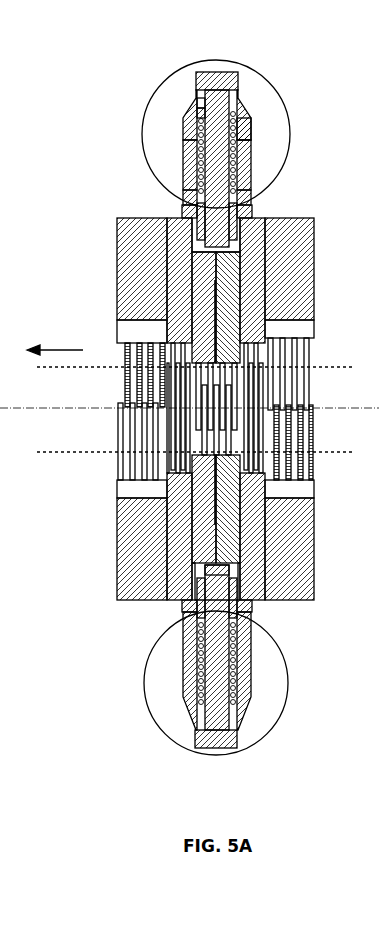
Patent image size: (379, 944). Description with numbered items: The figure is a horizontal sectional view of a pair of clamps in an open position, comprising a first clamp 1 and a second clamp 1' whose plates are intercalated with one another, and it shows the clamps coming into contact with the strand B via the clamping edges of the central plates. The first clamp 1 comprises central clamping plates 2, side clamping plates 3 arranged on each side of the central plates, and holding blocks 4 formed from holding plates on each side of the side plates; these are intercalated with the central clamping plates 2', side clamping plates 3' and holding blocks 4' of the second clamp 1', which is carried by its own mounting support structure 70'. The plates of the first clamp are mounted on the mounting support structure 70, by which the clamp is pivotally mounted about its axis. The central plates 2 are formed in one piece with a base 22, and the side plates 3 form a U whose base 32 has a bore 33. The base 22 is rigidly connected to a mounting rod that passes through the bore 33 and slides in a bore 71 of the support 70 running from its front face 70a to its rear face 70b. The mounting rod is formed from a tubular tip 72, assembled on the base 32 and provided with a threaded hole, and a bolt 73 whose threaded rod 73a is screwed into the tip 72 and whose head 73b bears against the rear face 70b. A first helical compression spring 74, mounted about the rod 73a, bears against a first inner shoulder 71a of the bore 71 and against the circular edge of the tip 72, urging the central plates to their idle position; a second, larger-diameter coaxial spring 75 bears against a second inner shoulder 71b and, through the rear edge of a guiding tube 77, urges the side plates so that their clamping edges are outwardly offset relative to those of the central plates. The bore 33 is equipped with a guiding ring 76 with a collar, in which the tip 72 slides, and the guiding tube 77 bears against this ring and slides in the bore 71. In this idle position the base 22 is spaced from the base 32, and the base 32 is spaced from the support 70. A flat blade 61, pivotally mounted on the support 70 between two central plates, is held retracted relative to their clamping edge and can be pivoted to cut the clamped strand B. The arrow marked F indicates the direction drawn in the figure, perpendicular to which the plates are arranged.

The first clamp 1 is at (152, 280).
The second clamp 1' is at (240, 527).
The central clamping plates 2 is at (135, 339).
The central clamping plates of the second clamp 2' is at (140, 470).
The side clamping plates 3 is at (171, 406).
The side clamping plates of the second clamp 3' is at (172, 421).
The holding blocks 4 is at (313, 365).
The holding blocks of the second clamp 4' is at (311, 451).
The base of the central clamping plates 22 is at (200, 272).
The base of the side clamping plates 32 is at (195, 234).
The bore of the base of the side plates 33 is at (270, 226).
The flat blade 61 is at (222, 307).
The mounting support structure 70 is at (222, 133).
The mounting support structure of the second clamp 70' is at (238, 660).
The front face of the support 70a is at (245, 197).
The rear face of the support 70b is at (240, 97).
The bore of the support 71 is at (244, 150).
The first inner shoulder 71a is at (193, 102).
The second inner shoulder 71b is at (246, 132).
The tubular tip 72 is at (198, 230).
The bolt 73 is at (188, 168).
The rod of the bolt 73a is at (182, 143).
The bolt head 73b is at (214, 74).
The first helical compression spring 74 is at (193, 110).
The second helical compression spring 75 is at (190, 127).
The guiding ring 76 is at (246, 214).
The guiding tube 77 is at (190, 205).
The flow direction F is at (55, 342).
The strand B is at (47, 453).